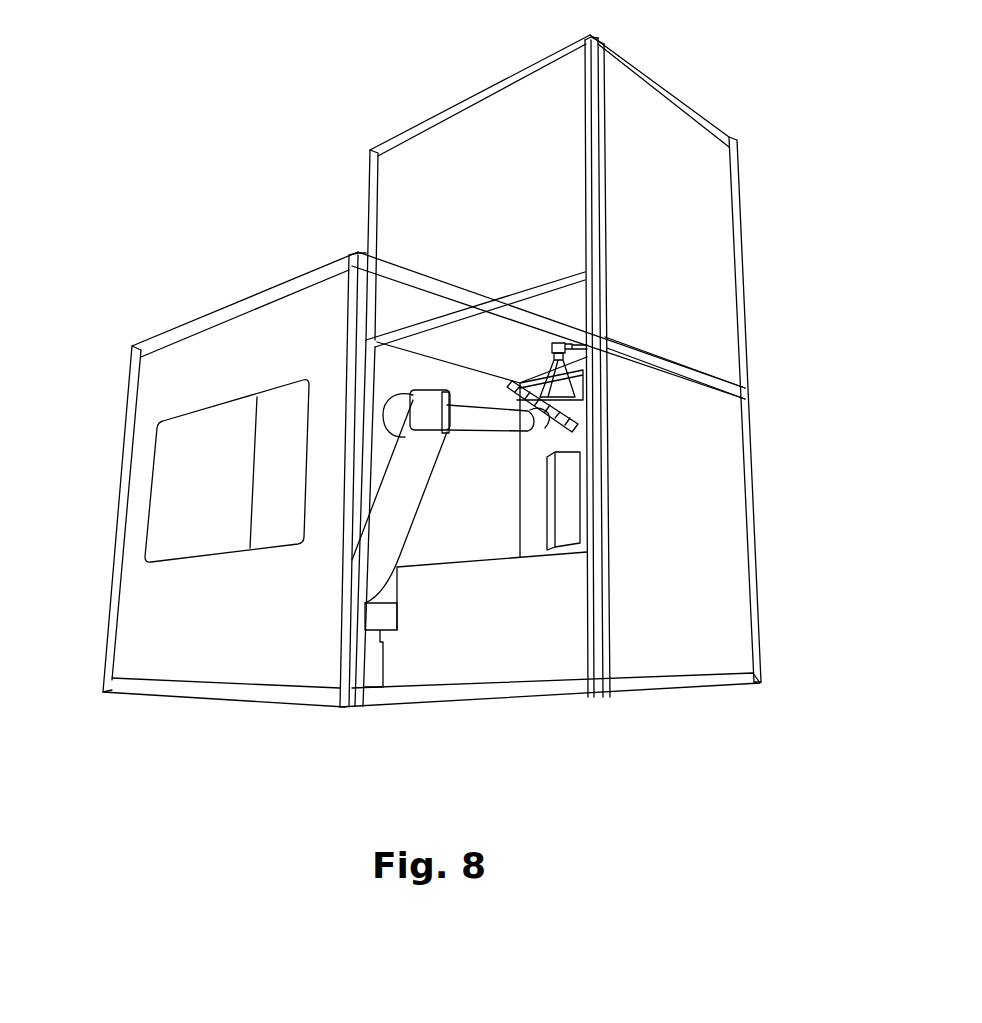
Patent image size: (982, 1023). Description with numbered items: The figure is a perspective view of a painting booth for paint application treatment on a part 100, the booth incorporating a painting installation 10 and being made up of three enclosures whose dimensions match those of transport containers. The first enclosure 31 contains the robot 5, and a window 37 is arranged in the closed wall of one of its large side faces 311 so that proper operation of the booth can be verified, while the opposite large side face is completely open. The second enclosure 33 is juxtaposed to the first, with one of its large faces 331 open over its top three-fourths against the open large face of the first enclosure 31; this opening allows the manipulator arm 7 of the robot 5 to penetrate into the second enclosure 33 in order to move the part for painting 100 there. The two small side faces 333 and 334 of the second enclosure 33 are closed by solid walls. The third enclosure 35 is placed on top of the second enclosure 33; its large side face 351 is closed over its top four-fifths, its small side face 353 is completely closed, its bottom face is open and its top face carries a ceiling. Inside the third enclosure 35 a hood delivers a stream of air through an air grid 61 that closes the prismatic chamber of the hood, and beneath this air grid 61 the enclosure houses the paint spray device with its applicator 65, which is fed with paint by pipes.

The painting installation 10 is at (800, 367).
The first enclosure 31 is at (223, 708).
The large side face 311 is at (133, 637).
The second enclosure 33 is at (770, 553).
The large face 331 is at (540, 642).
The small side face 333 is at (728, 647).
The small side face 334 is at (390, 360).
The third enclosure 35 is at (744, 173).
The large side face 351 is at (527, 117).
The small side face 353 is at (698, 261).
The window 37 is at (177, 495).
The robot 5 is at (385, 617).
The air grid 61 is at (473, 327).
The applicator 65 is at (553, 440).
The manipulator arm 7 is at (481, 416).
The part 100 is at (710, 503).